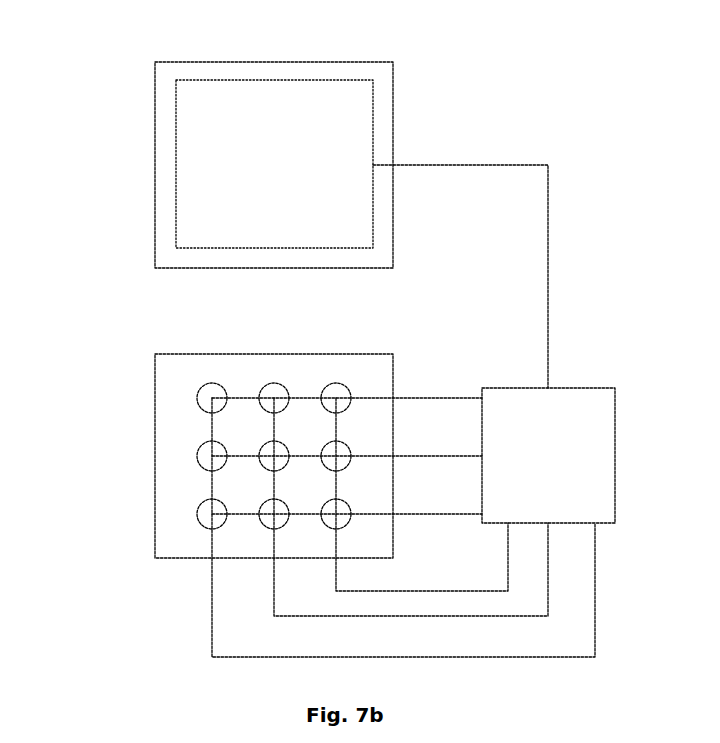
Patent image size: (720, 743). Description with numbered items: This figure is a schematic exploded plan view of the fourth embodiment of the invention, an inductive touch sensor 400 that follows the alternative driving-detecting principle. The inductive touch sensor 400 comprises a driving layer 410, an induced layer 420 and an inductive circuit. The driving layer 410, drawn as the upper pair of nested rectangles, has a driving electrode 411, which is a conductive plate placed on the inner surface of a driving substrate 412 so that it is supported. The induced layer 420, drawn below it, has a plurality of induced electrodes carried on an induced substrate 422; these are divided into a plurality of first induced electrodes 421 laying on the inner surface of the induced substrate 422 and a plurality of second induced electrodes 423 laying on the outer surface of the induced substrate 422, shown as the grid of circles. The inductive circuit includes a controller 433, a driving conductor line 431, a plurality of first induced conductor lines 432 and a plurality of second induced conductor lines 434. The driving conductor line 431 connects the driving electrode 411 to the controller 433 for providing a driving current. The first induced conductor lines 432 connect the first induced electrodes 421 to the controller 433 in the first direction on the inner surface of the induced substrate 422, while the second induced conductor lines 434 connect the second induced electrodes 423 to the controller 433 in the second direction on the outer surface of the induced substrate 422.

The inductive touch sensor 400 is at (91, 140).
The driving layer 410 is at (143, 97).
The driving electrode 411 is at (210, 100).
The driving substrate 412 is at (365, 73).
The induced layer 420 is at (143, 400).
The first induced electrodes 421 is at (210, 392).
The induced substrate 422 is at (378, 541).
The second induced electrodes 423 is at (222, 394).
The driving conductor line 431 is at (548, 275).
The first induced conductor lines 432 is at (437, 398).
The controller 433 is at (590, 462).
The second induced conductor lines 434 is at (594, 590).